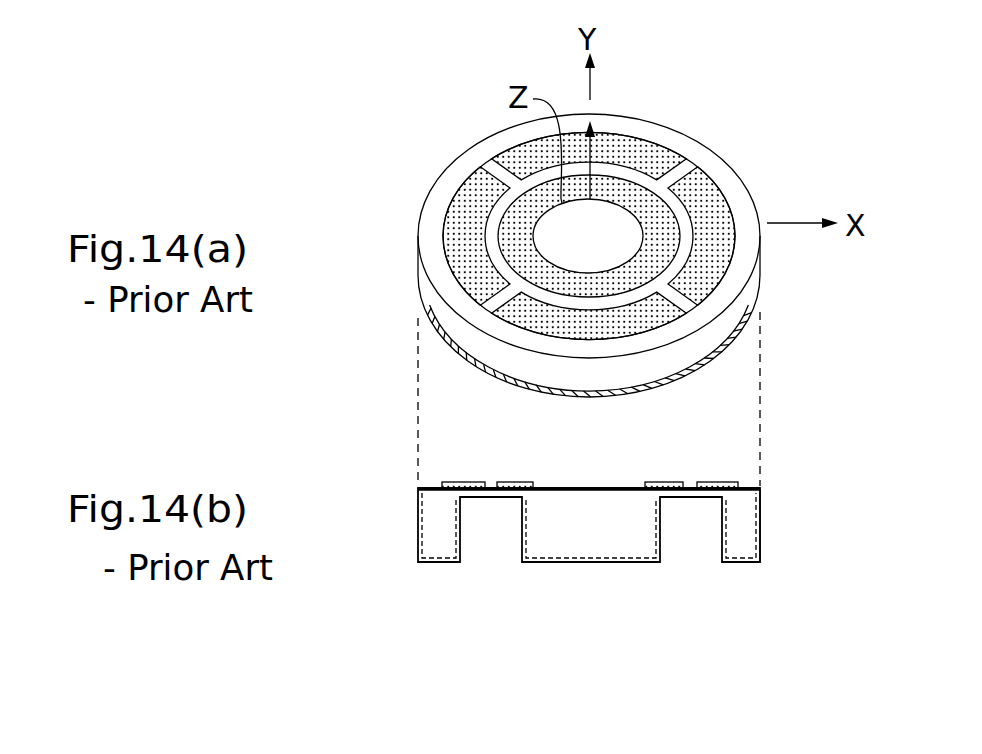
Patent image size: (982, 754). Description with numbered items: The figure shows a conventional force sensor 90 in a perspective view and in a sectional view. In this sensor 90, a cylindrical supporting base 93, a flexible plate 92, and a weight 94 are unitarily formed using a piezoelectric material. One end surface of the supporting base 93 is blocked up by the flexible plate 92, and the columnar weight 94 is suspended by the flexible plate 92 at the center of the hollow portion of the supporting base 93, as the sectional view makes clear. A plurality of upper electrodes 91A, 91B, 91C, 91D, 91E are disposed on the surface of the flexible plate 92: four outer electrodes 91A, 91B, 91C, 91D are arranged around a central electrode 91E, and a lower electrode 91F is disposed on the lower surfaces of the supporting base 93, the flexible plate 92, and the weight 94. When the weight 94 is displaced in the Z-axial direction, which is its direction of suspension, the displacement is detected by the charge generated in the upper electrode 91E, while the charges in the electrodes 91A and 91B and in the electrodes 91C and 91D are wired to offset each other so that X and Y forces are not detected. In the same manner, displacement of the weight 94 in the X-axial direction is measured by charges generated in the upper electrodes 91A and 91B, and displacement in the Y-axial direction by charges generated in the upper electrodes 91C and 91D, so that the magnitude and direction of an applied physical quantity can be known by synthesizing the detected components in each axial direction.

In FIG. 14A, the sensor 90 is at (466, 128).
In FIG. 14A, the upper electrode 91A is at (463, 217).
In FIG. 14B, the upper electrode 91A is at (463, 481).
In FIG. 14A, the upper electrode 91B is at (707, 207).
In FIG. 14B, the upper electrode 91B is at (722, 483).
In FIG. 14A, the upper electrode 91C is at (597, 320).
In FIG. 14A, the upper electrode 91D is at (627, 152).
In FIG. 14A, the upper electrode 91E is at (557, 283).
In FIG. 14A, the lower electrode 91F is at (437, 354).
In FIG. 14B, the lower electrode 91F is at (733, 562).
In FIG. 14A, the flexible plate 92 is at (684, 148).
In FIG. 14A, the supporting base 93 is at (732, 322).
In FIG. 14B, the supporting base 93 is at (750, 529).
In FIG. 14B, the weight 94 is at (612, 539).